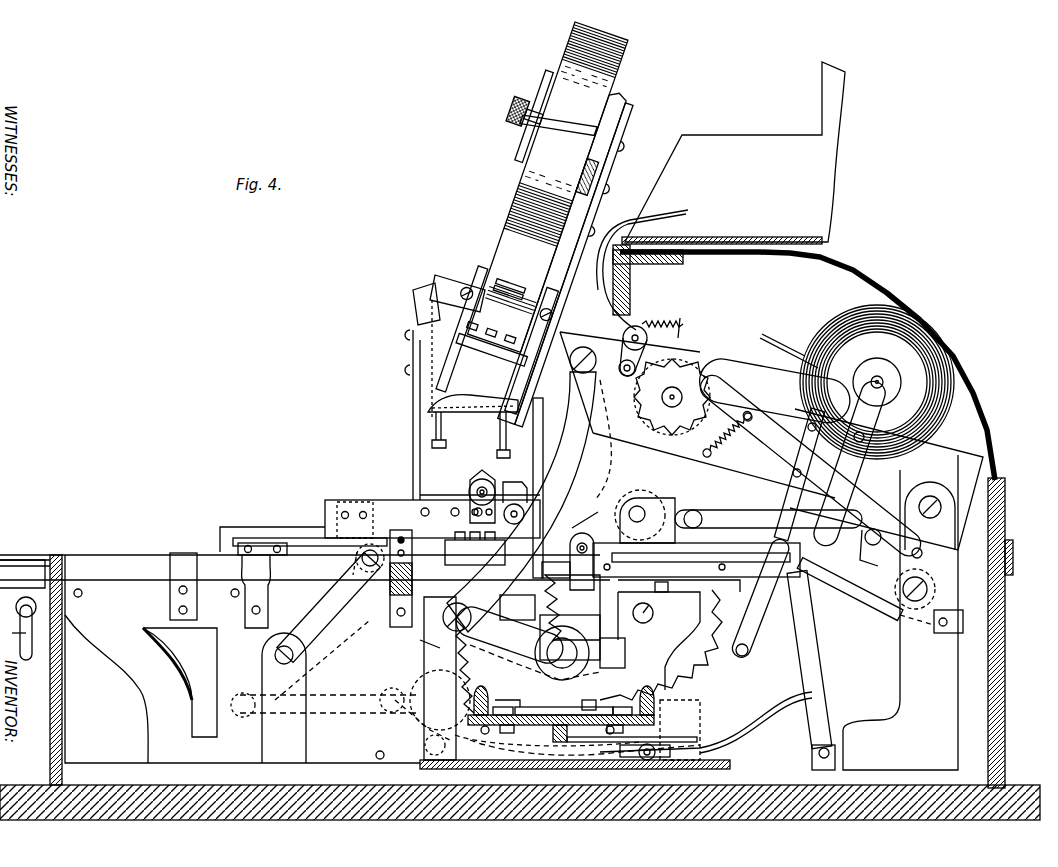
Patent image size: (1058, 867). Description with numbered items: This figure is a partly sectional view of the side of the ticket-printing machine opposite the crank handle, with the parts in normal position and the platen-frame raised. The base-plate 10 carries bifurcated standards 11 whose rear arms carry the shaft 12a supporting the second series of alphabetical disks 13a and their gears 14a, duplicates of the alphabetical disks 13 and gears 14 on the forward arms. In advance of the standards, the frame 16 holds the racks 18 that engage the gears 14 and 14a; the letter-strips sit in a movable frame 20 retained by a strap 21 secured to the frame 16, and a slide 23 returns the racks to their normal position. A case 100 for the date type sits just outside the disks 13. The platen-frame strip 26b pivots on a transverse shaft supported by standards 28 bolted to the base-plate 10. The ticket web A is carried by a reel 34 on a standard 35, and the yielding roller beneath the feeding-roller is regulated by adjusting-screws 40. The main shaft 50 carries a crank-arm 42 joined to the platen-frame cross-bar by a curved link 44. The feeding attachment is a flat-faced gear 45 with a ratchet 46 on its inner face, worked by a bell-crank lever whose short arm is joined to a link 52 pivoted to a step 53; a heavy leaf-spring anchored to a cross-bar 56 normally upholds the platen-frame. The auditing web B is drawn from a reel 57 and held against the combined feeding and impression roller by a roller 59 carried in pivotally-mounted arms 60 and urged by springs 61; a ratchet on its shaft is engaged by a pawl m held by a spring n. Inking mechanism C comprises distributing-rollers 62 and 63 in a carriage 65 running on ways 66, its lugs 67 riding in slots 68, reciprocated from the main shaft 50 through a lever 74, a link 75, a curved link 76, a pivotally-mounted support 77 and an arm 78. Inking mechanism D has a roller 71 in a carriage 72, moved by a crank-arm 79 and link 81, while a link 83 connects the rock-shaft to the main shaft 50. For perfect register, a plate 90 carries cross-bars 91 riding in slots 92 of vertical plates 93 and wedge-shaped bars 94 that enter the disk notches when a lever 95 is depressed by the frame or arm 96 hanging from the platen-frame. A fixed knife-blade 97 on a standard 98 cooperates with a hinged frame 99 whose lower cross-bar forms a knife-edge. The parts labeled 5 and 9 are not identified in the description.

The web A is at (541, 221).
The web B is at (810, 365).
The inking mechanism C is at (474, 426).
The inking mechanism D is at (585, 519).
The pawl m is at (792, 451).
The spring n is at (693, 409).
The adjusting screw 5 is at (14, 627).
The shaft 9 is at (620, 752).
The base-plate 10 is at (520, 794).
The bifurcated standards 11 is at (575, 670).
The shaft 12a is at (653, 610).
The alphabetical disks 13 is at (432, 647).
The alphabetical disks 13a is at (572, 617).
The gear 14 is at (517, 607).
The gears 14a is at (605, 638).
The frame 16 is at (305, 659).
The racks 18 is at (568, 561).
The movable frame 20 is at (22, 557).
The strap 21 is at (175, 553).
The slide 23 is at (46, 598).
The platen-frame strip 26b is at (886, 479).
The standards 28 is at (928, 621).
The reel 34 is at (545, 100).
The standard 35 is at (582, 196).
The adjusting-screws 40 is at (445, 430).
The crank-arm 42 is at (521, 641).
The link 44 is at (521, 489).
The flat-faced gear 45 is at (606, 486).
The ratchet 46 is at (684, 462).
The main shaft 50 is at (562, 653).
The link 52 is at (811, 670).
The step 53 is at (812, 753).
The cross-bar 56 is at (958, 610).
The reel 57 is at (857, 382).
The roller 59 is at (624, 333).
The pivotally-mounted arms 60 is at (622, 362).
The springs 61 is at (662, 321).
The distributing-roller 62 is at (512, 486).
The distributing-roller 63 is at (480, 478).
The carriage 65 is at (432, 519).
The ways 66 is at (268, 527).
The laterally-extending lugs 67 is at (335, 566).
The slots 68 is at (300, 540).
The roller 71 is at (643, 497).
The carriage 72 is at (647, 520).
The lever 74 is at (323, 653).
The link 75 is at (325, 705).
The curved link 76 is at (575, 772).
The pivotally-mounted support 77 is at (413, 723).
The arm 78 is at (560, 696).
The crank-arm 79 is at (811, 468).
The link 81 is at (727, 543).
The link 83 is at (866, 589).
The plate 90 is at (595, 698).
The cross-bars 91 is at (557, 722).
The slots 92 is at (561, 734).
The vertical plates 93 is at (554, 734).
The wedge-shaped strips or bars 94 is at (672, 698).
The lever 95 is at (706, 722).
The frame or arm 96 is at (777, 534).
The fixed knife-blade 97 is at (428, 412).
The standard 98 is at (540, 445).
The frame 99 is at (534, 353).
The case 100 is at (475, 548).